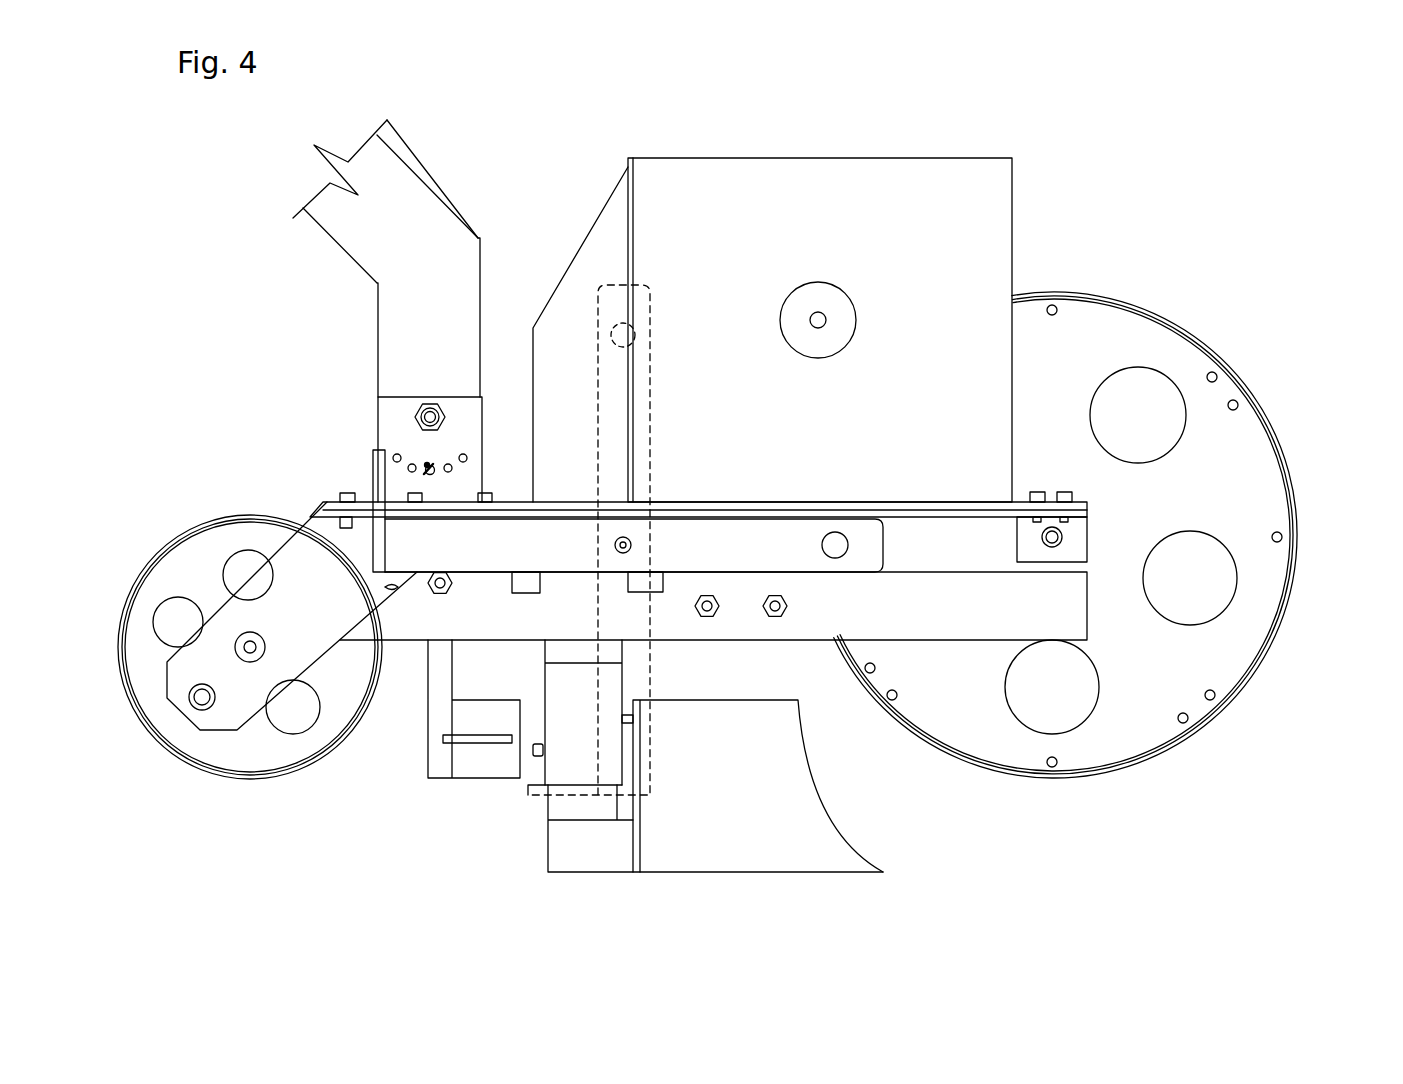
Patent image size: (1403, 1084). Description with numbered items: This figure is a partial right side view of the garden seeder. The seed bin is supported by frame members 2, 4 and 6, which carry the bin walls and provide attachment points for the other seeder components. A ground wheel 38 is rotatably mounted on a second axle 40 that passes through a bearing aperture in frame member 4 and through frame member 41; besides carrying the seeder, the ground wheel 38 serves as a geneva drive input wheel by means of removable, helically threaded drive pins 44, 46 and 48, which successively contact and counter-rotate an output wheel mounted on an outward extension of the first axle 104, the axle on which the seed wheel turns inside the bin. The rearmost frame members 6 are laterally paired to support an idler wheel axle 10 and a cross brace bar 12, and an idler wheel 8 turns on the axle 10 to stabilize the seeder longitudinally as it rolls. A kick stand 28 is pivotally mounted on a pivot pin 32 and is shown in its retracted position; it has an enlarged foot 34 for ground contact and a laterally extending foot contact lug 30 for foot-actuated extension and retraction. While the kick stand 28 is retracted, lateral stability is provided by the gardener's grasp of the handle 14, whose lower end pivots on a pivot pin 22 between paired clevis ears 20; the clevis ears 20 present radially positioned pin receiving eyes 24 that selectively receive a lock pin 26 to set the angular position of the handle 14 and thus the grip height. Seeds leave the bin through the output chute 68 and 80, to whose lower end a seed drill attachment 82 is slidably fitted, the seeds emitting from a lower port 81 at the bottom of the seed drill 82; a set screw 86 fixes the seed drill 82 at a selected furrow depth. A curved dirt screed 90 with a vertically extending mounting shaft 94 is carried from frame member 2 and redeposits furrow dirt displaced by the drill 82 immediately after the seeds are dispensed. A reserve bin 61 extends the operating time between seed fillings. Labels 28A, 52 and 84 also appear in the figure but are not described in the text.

The frame member 2 is at (500, 502).
The frame member 4 is at (947, 615).
The rearmost frame members 6 is at (317, 530).
The idler wheel 8 is at (163, 750).
The idler wheel axle 10 is at (250, 655).
The cross brace bar 12 is at (205, 705).
The handle 14 is at (357, 230).
The clevis ears 20 is at (397, 415).
The pivot pin 22 is at (420, 410).
The pin receiving eyes 24 is at (394, 455).
The lock pin 26 is at (433, 468).
The kick stand 28 is at (733, 545).
The hidden bracket 28A is at (615, 310).
The foot contact lug 30 is at (835, 548).
The pivot pin 32 is at (616, 550).
The enlarged foot 34 is at (375, 470).
The ground wheel 38 is at (1125, 300).
The second axle 40 is at (1062, 540).
The frame member 41 is at (1085, 527).
The drive pin 44 is at (1052, 768).
The drive pin 46 is at (1283, 538).
The drive pin 48 is at (1052, 305).
The rim holes 52 is at (1215, 375).
The reserve bin 61 is at (985, 175).
The output chute 68 is at (578, 283).
The output chute 80 is at (570, 692).
The lower port 81 is at (598, 875).
The seed drill attachment 82 is at (725, 848).
The base plate 84 is at (580, 805).
The set screw 86 is at (538, 757).
The curved dirt screed 90 is at (470, 760).
The mounting shaft 94 is at (440, 695).
The axle 104 is at (825, 315).